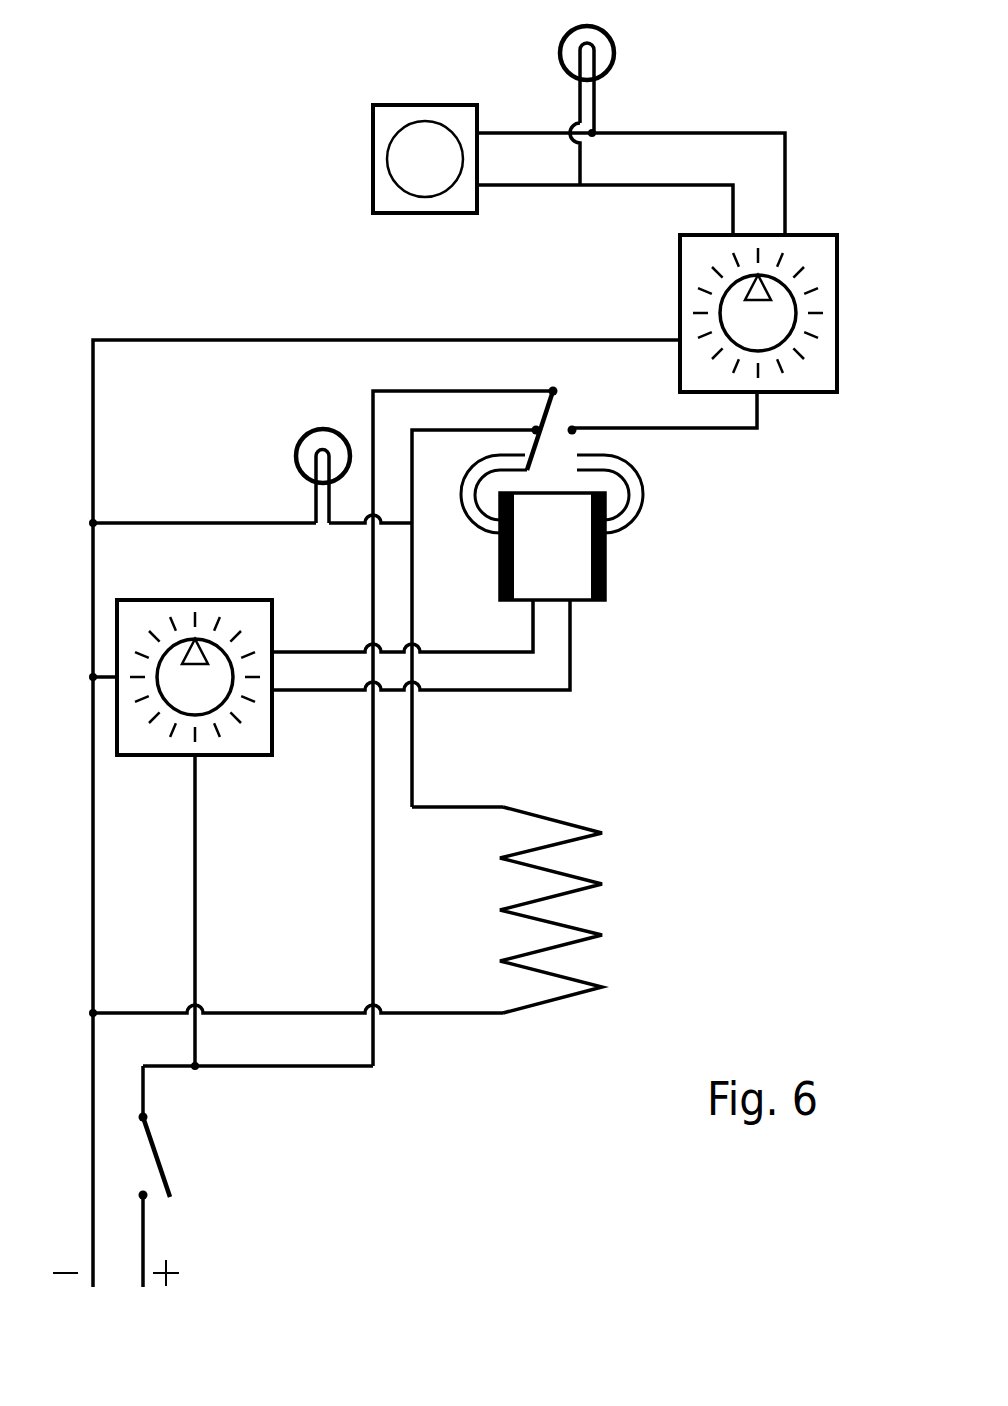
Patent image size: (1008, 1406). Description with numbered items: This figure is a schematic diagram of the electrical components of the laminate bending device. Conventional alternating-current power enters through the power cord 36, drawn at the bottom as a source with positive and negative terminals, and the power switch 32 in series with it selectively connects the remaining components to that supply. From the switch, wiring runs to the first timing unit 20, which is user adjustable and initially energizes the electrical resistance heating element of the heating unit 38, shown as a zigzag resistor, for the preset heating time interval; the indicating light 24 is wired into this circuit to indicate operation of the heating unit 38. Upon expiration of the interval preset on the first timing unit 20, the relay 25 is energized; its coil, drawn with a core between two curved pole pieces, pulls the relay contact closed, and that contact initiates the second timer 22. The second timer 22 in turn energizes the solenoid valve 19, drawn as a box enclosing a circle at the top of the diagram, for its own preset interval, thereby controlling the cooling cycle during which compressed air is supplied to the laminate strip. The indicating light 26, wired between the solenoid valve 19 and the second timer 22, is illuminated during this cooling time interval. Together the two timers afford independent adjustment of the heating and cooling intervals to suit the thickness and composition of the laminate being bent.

The solenoid valve 19 is at (380, 125).
The first timing unit 20 is at (235, 612).
The second timer 22 is at (837, 337).
The indicating light 24 is at (300, 452).
The relay 25 is at (605, 563).
The indicating light 26 is at (612, 47).
The power switch 32 is at (160, 1155).
The power cord 36 is at (118, 1277).
The heating unit 38 is at (590, 878).